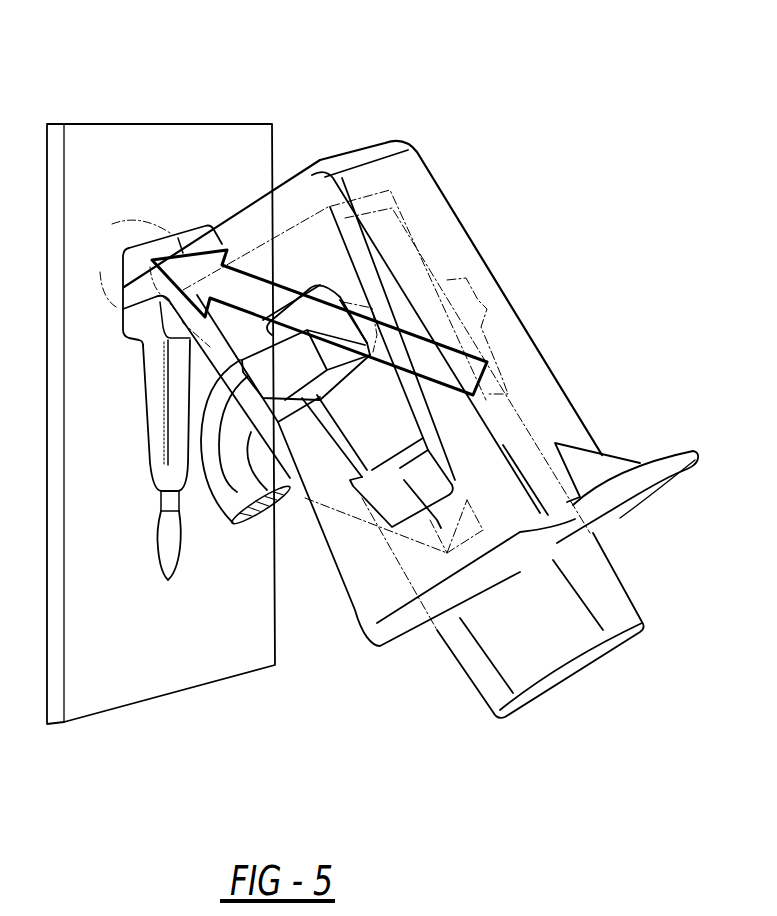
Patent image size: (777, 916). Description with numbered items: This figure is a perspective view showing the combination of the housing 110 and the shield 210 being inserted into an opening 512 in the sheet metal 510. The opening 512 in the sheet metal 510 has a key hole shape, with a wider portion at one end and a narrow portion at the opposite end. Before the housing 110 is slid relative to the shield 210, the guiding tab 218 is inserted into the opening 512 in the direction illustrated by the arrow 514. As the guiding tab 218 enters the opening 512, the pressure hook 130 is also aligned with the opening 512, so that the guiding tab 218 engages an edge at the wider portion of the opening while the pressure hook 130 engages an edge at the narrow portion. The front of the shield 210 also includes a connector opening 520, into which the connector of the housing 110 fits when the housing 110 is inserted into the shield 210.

The housing 110 is at (378, 430).
The pressure hook 130 is at (253, 488).
The shield 210 is at (442, 220).
The guiding tab 218 is at (142, 258).
The sheet metal 510 is at (114, 614).
The opening 512 is at (157, 415).
The arrow 514 is at (263, 287).
The connector opening 520 is at (592, 533).